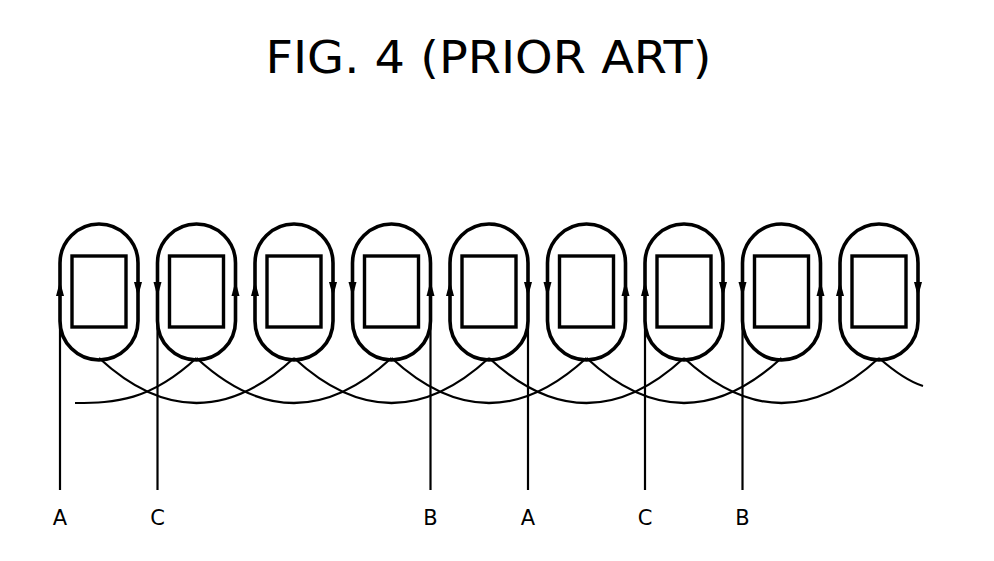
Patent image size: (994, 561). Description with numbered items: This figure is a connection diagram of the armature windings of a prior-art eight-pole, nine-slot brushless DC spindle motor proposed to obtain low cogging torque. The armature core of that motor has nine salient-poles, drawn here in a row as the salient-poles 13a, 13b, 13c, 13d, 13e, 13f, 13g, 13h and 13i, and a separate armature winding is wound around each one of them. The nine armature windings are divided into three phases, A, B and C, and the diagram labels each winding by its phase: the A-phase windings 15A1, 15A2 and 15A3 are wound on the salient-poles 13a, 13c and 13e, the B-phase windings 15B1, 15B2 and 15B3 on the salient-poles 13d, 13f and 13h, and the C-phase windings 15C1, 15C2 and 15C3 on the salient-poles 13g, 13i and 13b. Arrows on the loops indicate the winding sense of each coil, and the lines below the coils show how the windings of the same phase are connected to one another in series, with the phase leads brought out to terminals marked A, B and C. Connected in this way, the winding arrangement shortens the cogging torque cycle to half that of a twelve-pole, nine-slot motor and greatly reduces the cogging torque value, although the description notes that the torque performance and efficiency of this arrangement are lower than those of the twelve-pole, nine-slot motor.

The salient-pole 13a is at (99, 291).
The salient-pole 13b is at (197, 291).
The salient-pole 13c is at (294, 291).
The salient-pole 13d is at (392, 291).
The salient-pole 13e is at (489, 291).
The salient-pole 13f is at (587, 291).
The salient-pole 13g is at (684, 291).
The salient-pole 13h is at (782, 291).
The salient-pole 13i is at (879, 291).
The armature winding 15A1 is at (98, 224).
The armature winding 15C3 is at (196, 224).
The armature winding 15A2 is at (293, 224).
The armature winding 15B1 is at (390, 224).
The armature winding 15A3 is at (488, 224).
The armature winding 15B2 is at (586, 224).
The armature winding 15C1 is at (683, 224).
The armature winding 15B3 is at (780, 224).
The armature winding 15C2 is at (878, 224).